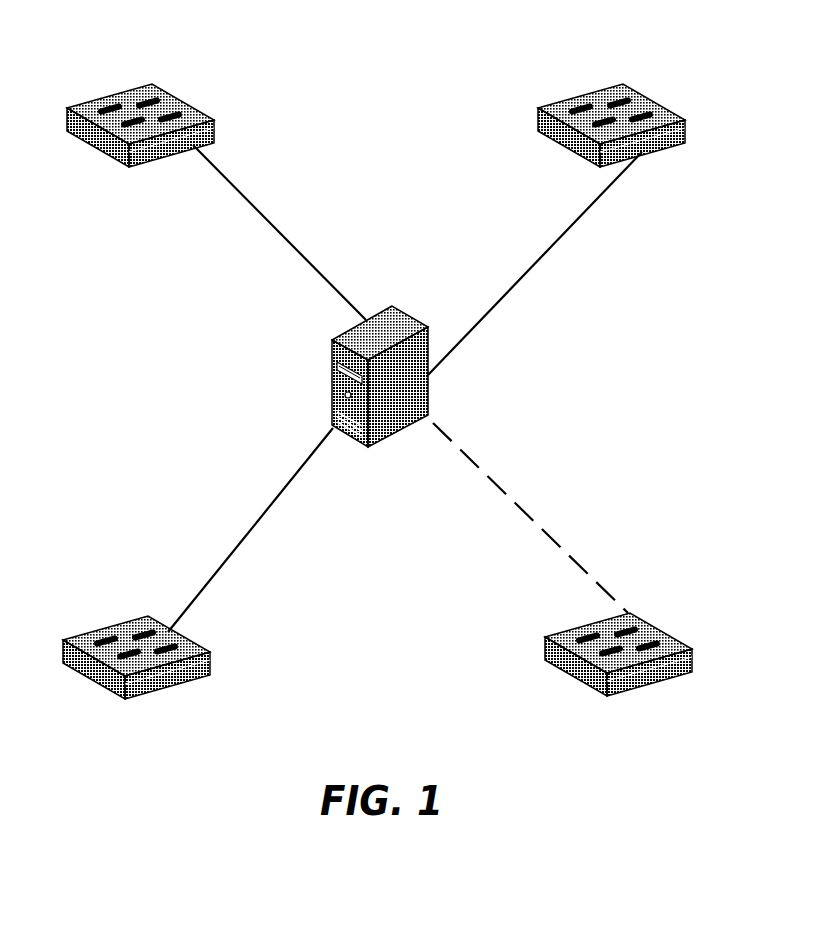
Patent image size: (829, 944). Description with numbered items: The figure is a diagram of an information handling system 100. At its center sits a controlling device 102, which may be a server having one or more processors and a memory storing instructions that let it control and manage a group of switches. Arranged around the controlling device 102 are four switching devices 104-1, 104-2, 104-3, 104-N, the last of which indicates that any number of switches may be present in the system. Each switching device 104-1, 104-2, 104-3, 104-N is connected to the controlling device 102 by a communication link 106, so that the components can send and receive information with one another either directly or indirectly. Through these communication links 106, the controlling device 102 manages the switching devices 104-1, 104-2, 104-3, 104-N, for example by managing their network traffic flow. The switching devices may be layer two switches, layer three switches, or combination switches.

The information handling system 100 is at (45, 25).
The controlling device 102 is at (410, 420).
The switching device 104-1 is at (213, 120).
The switching device 104-2 is at (538, 135).
The switching device 104-3 is at (210, 653).
The switching device 104-N is at (692, 649).
The communication link 106 is at (405, 388).